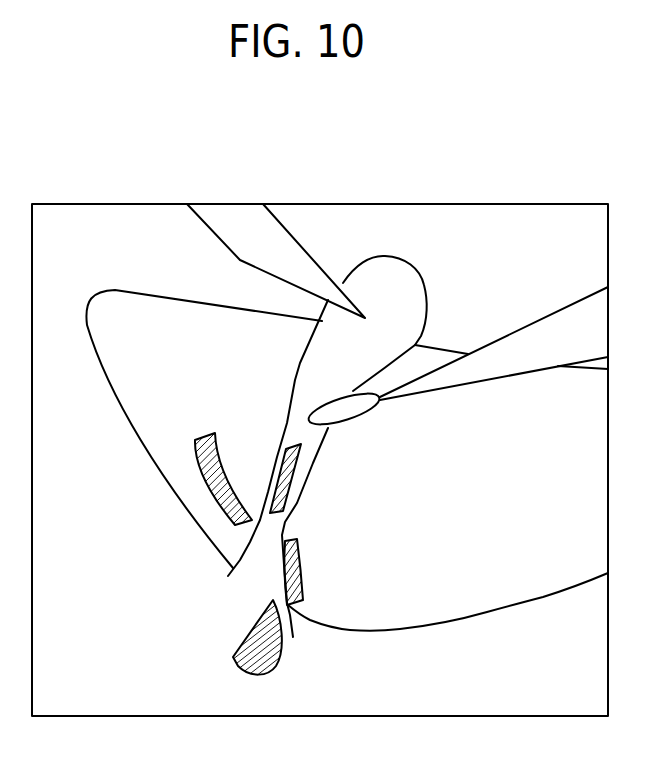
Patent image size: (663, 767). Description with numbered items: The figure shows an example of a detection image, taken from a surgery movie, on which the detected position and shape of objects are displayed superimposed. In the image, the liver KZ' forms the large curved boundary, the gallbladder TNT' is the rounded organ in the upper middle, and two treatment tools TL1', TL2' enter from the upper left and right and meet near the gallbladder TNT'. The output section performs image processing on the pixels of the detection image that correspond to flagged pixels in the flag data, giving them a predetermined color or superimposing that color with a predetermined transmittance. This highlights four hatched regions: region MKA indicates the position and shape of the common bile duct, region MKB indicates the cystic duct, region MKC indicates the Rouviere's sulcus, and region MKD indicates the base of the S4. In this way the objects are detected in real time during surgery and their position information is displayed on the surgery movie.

The treatment tool TL1' is at (286, 261).
The treatment tool TL2' is at (456, 347).
The gallbladder TNT' is at (360, 432).
The liver KZ' is at (448, 510).
The region indicating the position and shape of the common bile duct MKA is at (288, 656).
The region indicating the position and shape of the cystic duct MKB is at (277, 444).
The region indicating the position and shape of the Rouviere's sulcus MKC is at (202, 424).
The region indicating the position and shape of the base of the S4 MKD is at (310, 565).